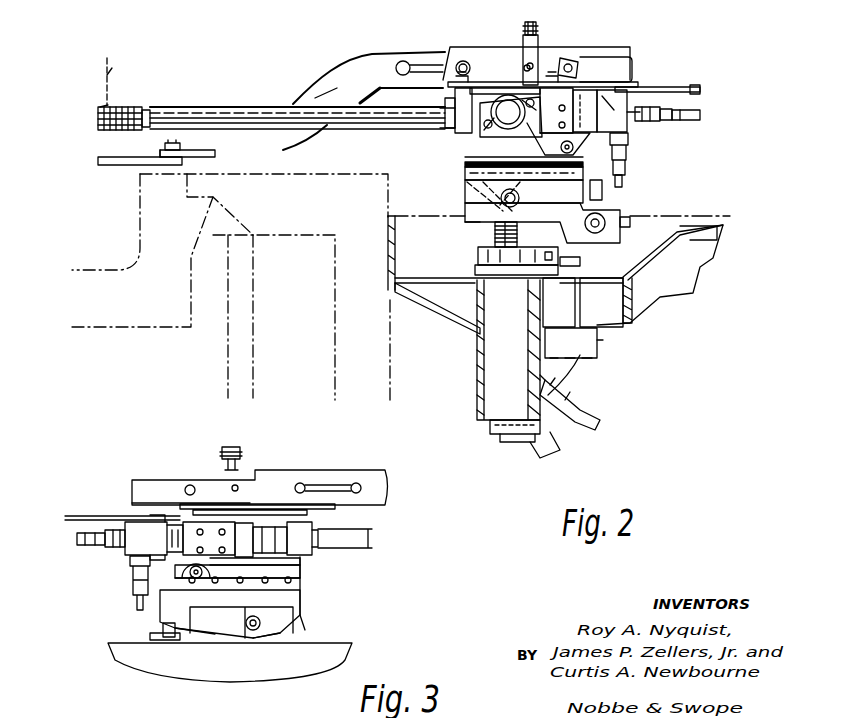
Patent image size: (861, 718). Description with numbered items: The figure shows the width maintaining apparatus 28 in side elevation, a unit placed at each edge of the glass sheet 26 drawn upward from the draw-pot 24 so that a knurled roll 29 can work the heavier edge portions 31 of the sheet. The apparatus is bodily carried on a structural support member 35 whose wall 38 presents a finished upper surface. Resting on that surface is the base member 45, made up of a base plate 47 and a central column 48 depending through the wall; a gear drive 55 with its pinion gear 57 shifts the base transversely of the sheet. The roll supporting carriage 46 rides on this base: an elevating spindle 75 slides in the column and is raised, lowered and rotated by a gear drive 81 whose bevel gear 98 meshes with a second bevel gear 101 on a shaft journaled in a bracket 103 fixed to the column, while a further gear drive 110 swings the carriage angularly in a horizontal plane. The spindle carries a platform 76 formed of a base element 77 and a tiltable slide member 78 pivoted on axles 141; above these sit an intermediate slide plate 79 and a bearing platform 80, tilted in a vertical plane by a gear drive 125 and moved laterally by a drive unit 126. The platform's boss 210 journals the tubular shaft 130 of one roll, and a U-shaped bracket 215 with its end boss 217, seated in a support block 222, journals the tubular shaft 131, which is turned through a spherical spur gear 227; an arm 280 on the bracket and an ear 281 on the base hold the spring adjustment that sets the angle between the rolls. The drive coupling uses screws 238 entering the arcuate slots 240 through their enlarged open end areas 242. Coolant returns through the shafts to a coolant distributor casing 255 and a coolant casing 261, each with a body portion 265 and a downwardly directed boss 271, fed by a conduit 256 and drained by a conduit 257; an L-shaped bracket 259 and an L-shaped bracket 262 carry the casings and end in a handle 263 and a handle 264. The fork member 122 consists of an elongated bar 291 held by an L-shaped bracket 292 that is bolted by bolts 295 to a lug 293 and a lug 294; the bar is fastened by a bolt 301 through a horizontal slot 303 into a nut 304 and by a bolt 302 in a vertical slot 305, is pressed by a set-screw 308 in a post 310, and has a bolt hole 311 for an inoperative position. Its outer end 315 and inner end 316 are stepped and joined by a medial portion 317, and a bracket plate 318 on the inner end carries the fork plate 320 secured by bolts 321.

In FIG. 2, the draw-pot 24 is at (145, 290).
In FIG. 2, the glass sheet 26 is at (112, 65).
In FIG. 2, the width maintaining apparatus 28 is at (673, 60).
In FIG. 3, the width maintaining apparatus 28 is at (100, 472).
In FIG. 2, the knurled roll 29 is at (98, 120).
In FIG. 2, the edge portions 31 is at (111, 106).
In FIG. 2, the structural support member 35 is at (652, 300).
In FIG. 3, the structural support member 35 is at (197, 665).
In FIG. 2, the wall 38 is at (648, 266).
In FIG. 2, the base member 45 is at (505, 302).
In FIG. 2, the roll supporting carriage 46 is at (465, 167).
In FIG. 2, the base plate 47 is at (490, 273).
In FIG. 2, the column 48 is at (505, 345).
In FIG. 2, the gear drive 55 is at (600, 354).
In FIG. 2, the pinion gear 57 is at (580, 259).
In FIG. 2, the elevating spindle 75 is at (493, 235).
In FIG. 2, the platform 76 is at (497, 214).
In FIG. 3, the platform 76 is at (258, 634).
In FIG. 2, the base element 77 is at (480, 208).
In FIG. 3, the base element 77 is at (276, 622).
In FIG. 2, the tiltable slide member 78 is at (475, 188).
In FIG. 3, the tiltable slide member 78 is at (290, 628).
In FIG. 2, the intermediate slide plate 79 is at (490, 172).
In FIG. 2, the bearing platform 80 is at (462, 163).
In FIG. 3, the bearing platform 80 is at (280, 598).
In FIG. 2, the gear drive 81 is at (505, 443).
In FIG. 2, the bevel gear 98 is at (490, 430).
In FIG. 2, the second bevel gear 101 is at (538, 455).
In FIG. 2, the bracket 103 is at (560, 403).
In FIG. 2, the gear drive 110 is at (476, 258).
In FIG. 2, the fork member 122 is at (313, 95).
In FIG. 3, the fork member 122 is at (378, 482).
In FIG. 2, the gear drive 125 is at (632, 224).
In FIG. 2, the drive unit 126 is at (605, 192).
In FIG. 2, the tubular shaft 130 is at (232, 116).
In FIG. 3, the tubular shaft 131 is at (345, 540).
In FIG. 2, the axles 141 is at (522, 196).
In FIG. 3, the axles 141 is at (246, 628).
In FIG. 2, the boss 210 is at (447, 120).
In FIG. 3, the U-shaped bracket 215 is at (265, 570).
In FIG. 3, the end boss 217 is at (295, 548).
In FIG. 3, the support block 222 is at (250, 582).
In FIG. 3, the spherical spur gear 227 is at (285, 560).
In FIG. 2, the screws 238 is at (535, 130).
In FIG. 2, the arcuate slots 240 is at (470, 135).
In FIG. 2, the enlarged open end areas 242 is at (495, 140).
In FIG. 2, the coolant distributor casing 255 is at (645, 122).
In FIG. 2, the conduit 256 is at (702, 114).
In FIG. 3, the conduit 256 is at (85, 546).
In FIG. 2, the conduit 257 is at (625, 184).
In FIG. 3, the conduit 257 is at (137, 602).
In FIG. 2, the L-shaped bracket 259 is at (650, 89).
In FIG. 3, the coolant casing 261 is at (148, 540).
In FIG. 3, the L-shaped bracket 262 is at (105, 538).
In FIG. 2, the handle 263 is at (700, 86).
In FIG. 3, the handle 264 is at (100, 515).
In FIG. 2, the body portion 265 is at (612, 115).
In FIG. 2, the downwardly directed boss 271 is at (628, 150).
In FIG. 3, the arm 280 is at (200, 575).
In FIG. 3, the ear 281 is at (185, 628).
In FIG. 2, the elongated bar 291 is at (385, 58).
In FIG. 3, the elongated bar 291 is at (372, 500).
In FIG. 2, the L-shaped bracket 292 is at (485, 65).
In FIG. 2, the lug 293 is at (445, 96).
In FIG. 2, the lug 294 is at (575, 90).
In FIG. 2, the bolts 295 is at (523, 78).
In FIG. 2, the bolt 301 is at (460, 62).
In FIG. 3, the bolt 301 is at (301, 483).
In FIG. 2, the bolt 302 is at (575, 66).
In FIG. 3, the bolt 302 is at (190, 484).
In FIG. 2, the horizontal slot 303 is at (396, 70).
In FIG. 3, the horizontal slot 303 is at (346, 483).
In FIG. 2, the nut 304 is at (465, 60).
In FIG. 2, the vertical slot 305 is at (570, 63).
In FIG. 2, the set-screw 308 is at (533, 22).
In FIG. 3, the set-screw 308 is at (237, 450).
In FIG. 2, the post 310 is at (536, 50).
In FIG. 2, the bolt hole 311 is at (518, 66).
In FIG. 3, the bolt hole 311 is at (240, 490).
In FIG. 2, the outer end 315 is at (630, 60).
In FIG. 3, the outer end 315 is at (150, 487).
In FIG. 2, the inner end 316 is at (265, 135).
In FIG. 2, the medial portion 317 is at (340, 95).
In FIG. 2, the bracket plate 318 is at (200, 156).
In FIG. 2, the fork plate 320 is at (98, 160).
In FIG. 2, the bolts 321 is at (172, 142).